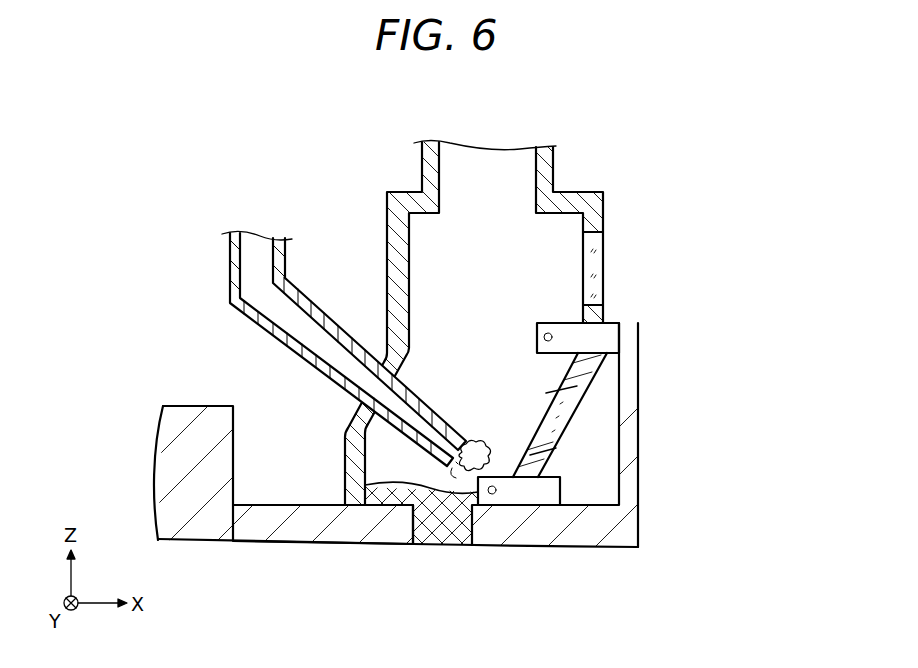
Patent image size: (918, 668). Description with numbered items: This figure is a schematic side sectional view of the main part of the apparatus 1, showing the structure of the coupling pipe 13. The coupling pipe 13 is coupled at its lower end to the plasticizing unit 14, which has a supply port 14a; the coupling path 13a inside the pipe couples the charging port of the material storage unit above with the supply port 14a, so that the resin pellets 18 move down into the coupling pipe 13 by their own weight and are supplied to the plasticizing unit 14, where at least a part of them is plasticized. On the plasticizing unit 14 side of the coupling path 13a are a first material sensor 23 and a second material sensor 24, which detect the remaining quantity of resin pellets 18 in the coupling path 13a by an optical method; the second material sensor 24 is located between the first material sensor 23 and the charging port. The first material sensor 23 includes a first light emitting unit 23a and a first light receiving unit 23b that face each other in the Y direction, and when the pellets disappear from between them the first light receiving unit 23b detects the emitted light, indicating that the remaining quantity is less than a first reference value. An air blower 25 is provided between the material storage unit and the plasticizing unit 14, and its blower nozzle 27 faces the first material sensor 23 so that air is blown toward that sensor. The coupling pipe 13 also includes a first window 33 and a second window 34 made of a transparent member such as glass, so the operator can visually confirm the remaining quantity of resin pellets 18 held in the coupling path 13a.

The processing apparatus 1 is at (794, 127).
The coupling pipe 13 is at (773, 149).
The coupling path 13a is at (437, 176).
The plasticizing unit 14 is at (773, 506).
The supply port 14a is at (460, 545).
The resin pellets 18 is at (428, 527).
The first material sensor 23 is at (538, 490).
The first light emitting unit 23a is at (541, 555).
The first light receiving unit 23b is at (494, 489).
The second material sensor 24 is at (618, 340).
The air blower 25 is at (230, 269).
The blower nozzle 27 is at (306, 354).
The first window 33 is at (552, 432).
The second window 34 is at (597, 260).